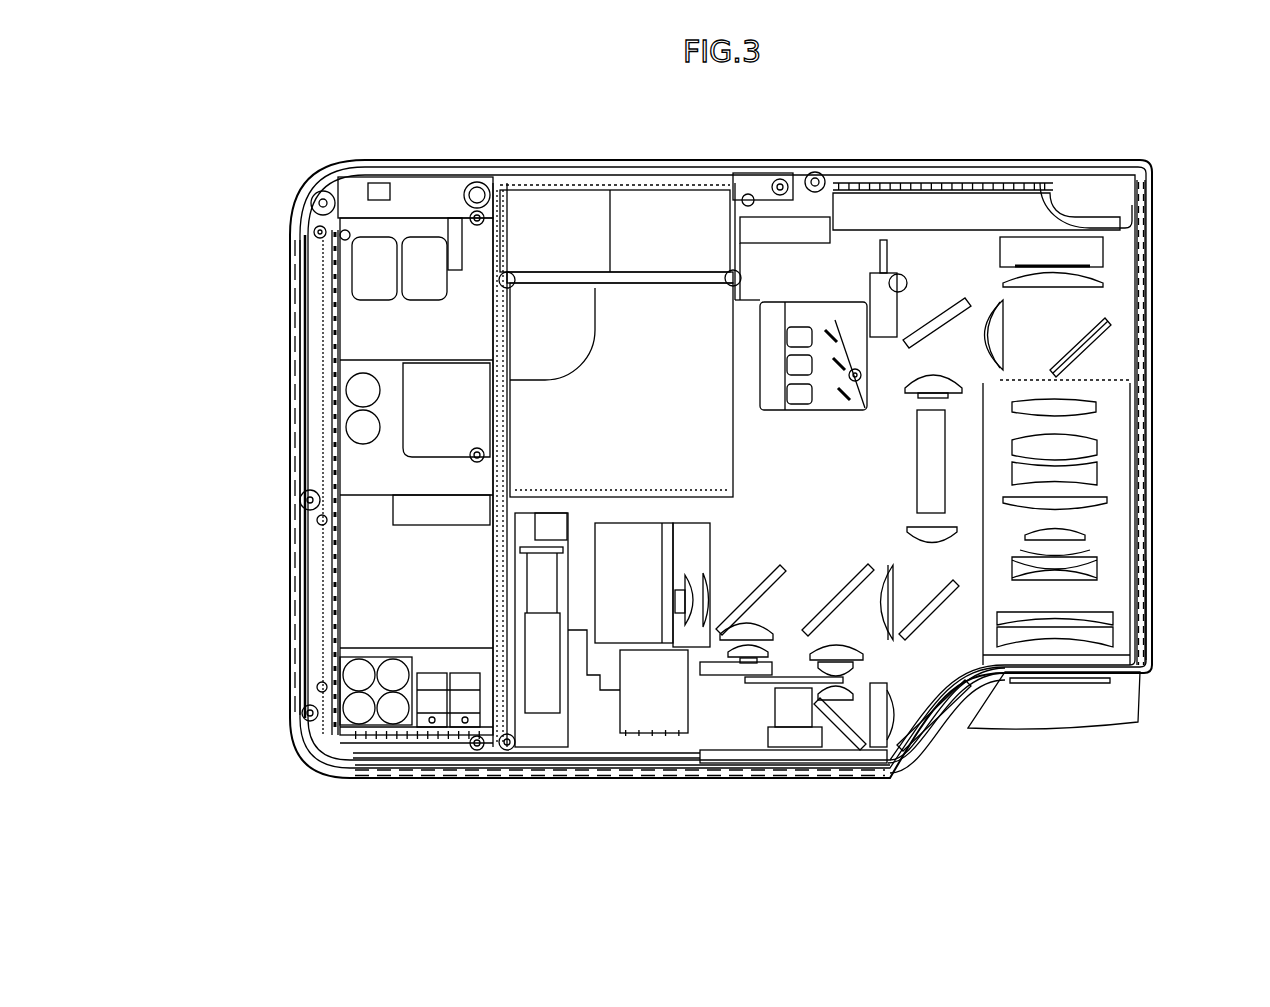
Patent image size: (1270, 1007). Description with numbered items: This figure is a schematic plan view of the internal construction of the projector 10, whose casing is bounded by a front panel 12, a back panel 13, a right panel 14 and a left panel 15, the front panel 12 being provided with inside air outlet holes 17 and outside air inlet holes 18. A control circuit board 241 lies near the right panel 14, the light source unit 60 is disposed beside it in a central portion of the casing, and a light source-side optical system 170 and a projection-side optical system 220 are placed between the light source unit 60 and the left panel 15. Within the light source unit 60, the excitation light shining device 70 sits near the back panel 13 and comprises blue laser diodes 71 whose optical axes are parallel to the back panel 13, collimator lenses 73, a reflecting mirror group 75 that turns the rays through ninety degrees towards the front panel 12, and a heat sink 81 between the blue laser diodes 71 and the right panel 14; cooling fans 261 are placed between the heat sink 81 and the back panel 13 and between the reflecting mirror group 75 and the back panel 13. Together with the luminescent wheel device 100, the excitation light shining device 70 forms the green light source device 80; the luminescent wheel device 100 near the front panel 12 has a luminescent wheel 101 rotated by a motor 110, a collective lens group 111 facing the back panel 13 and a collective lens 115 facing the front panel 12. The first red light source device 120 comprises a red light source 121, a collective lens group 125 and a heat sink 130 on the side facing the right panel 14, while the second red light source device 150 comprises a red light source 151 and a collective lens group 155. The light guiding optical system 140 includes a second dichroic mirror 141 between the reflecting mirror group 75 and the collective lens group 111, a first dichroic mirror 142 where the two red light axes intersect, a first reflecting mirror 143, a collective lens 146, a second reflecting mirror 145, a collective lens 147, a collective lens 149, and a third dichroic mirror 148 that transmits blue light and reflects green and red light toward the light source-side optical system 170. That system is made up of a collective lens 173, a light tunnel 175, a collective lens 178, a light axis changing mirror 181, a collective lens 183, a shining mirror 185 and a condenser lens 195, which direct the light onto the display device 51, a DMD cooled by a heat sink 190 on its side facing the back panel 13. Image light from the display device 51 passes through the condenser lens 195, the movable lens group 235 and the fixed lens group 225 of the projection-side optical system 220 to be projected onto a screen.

The projector 10 is at (1153, 152).
The front panel 12 is at (385, 764).
The back panel 13 is at (603, 165).
The right panel 14 is at (303, 350).
The left panel 15 is at (1148, 615).
The inside air outlet holes 17 is at (292, 381).
The outside air inlet holes 18 is at (566, 165).
The display device 51 is at (1085, 268).
The light source unit 60 is at (723, 433).
The excitation light shining device 70 is at (758, 298).
The blue laser diodes 71 is at (790, 390).
The collimator lenses 73 is at (790, 360).
The reflecting mirror group 75 is at (840, 398).
The green light source device 80 is at (813, 473).
The heat sink 81 is at (645, 357).
The luminescent wheel device 100 is at (835, 700).
The luminescent wheel 101 is at (760, 683).
The motor 110 is at (790, 722).
The collective lens group 111 is at (880, 745).
The collective lens 115 is at (840, 750).
The first red light source device 120 is at (685, 625).
The red light source 121 is at (675, 603).
The collective lens group 125 is at (697, 577).
The heat sink 130 is at (605, 583).
The light guiding optical system 140 is at (977, 675).
The second dichroic mirror 141 is at (853, 578).
The first dichroic mirror 142 is at (747, 597).
The first reflecting mirror 143 is at (825, 720).
The second reflecting mirror 145 is at (940, 722).
The collective lens 146 is at (900, 760).
The collective lens 147 is at (945, 663).
The third dichroic mirror 148 is at (927, 607).
The collective lens 149 is at (887, 567).
The second red light source device 150 is at (673, 717).
The red light source 151 is at (697, 730).
The collective lens group 155 is at (763, 622).
The light source-side optical system 170 is at (947, 300).
The collective lens 173 is at (947, 540).
The light tunnel 175 is at (935, 512).
The collective lens 178 is at (925, 380).
The light axis changing mirror 181 is at (935, 313).
The collective lens 183 is at (1003, 318).
The shining mirror 185 is at (1095, 347).
The heat sink 190 is at (1022, 202).
The condenser lens 195 is at (1100, 285).
The projection-side optical system 220 is at (1105, 470).
The fixed lens group 225 is at (1082, 642).
The movable lens group 235 is at (1105, 428).
The control circuit board 241 is at (397, 535).
The cooling fan 261 is at (517, 226).